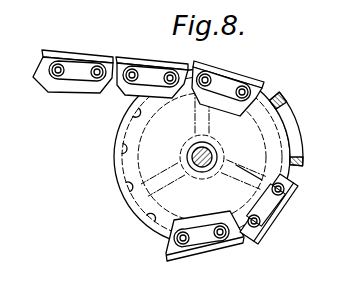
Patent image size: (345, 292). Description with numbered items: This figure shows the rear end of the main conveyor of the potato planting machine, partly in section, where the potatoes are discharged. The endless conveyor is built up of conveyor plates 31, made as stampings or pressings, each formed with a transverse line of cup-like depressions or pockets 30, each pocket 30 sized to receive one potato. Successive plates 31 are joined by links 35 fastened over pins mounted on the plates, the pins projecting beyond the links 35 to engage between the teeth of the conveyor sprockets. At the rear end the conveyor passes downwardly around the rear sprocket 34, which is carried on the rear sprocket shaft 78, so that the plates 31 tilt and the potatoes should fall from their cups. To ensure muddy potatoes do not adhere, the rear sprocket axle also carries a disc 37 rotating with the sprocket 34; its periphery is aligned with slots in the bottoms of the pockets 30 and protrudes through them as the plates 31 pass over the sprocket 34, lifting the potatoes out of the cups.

The pocket 30 is at (291, 134).
The conveyor plate 31 is at (247, 77).
The rear sprocket 34 is at (150, 219).
The link 35 is at (247, 232).
The disc 37 is at (118, 186).
The rear sprocket shaft 78 is at (208, 152).